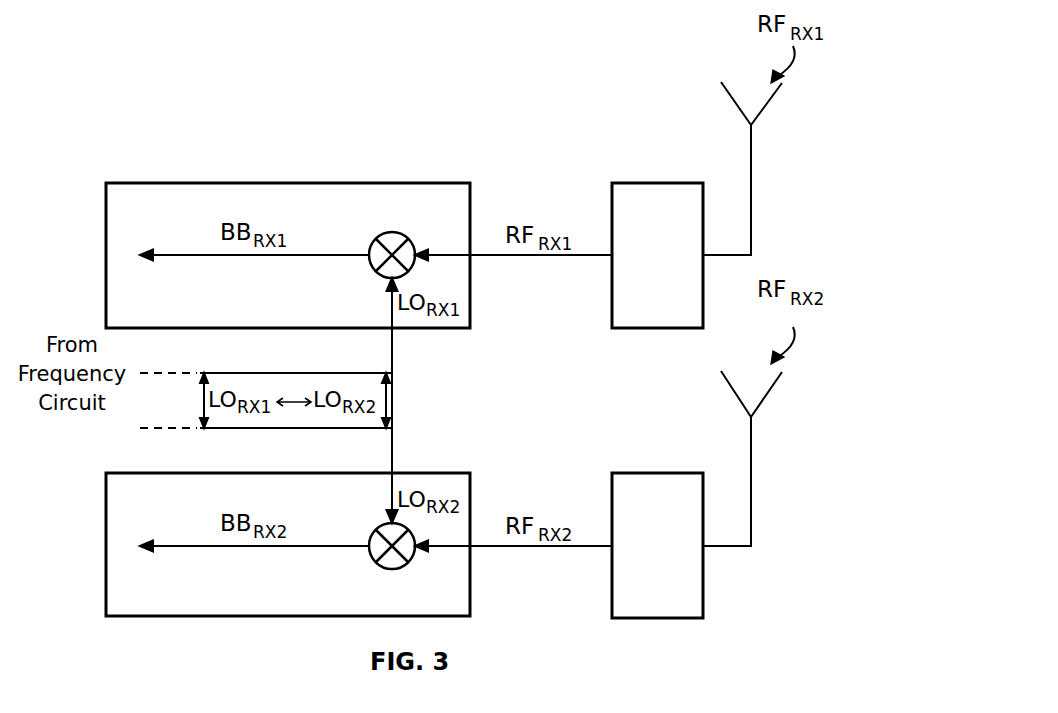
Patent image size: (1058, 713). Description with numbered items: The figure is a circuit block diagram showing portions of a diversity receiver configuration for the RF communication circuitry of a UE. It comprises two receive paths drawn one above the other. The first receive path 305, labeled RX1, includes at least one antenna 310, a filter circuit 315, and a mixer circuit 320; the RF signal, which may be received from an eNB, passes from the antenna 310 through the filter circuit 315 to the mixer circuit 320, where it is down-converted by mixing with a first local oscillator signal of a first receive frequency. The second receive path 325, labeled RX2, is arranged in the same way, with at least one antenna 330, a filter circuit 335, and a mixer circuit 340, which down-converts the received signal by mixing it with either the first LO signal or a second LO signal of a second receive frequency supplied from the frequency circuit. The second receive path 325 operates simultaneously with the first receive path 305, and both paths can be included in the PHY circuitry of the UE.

The first receive path 305 is at (168, 183).
The antenna 310 is at (750, 141).
The filter circuit 315 is at (675, 183).
The mixer circuit 320 is at (368, 268).
The second receive path 325 is at (168, 473).
The antenna 330 is at (750, 432).
The filter circuit 335 is at (675, 473).
The mixer circuit 340 is at (376, 530).